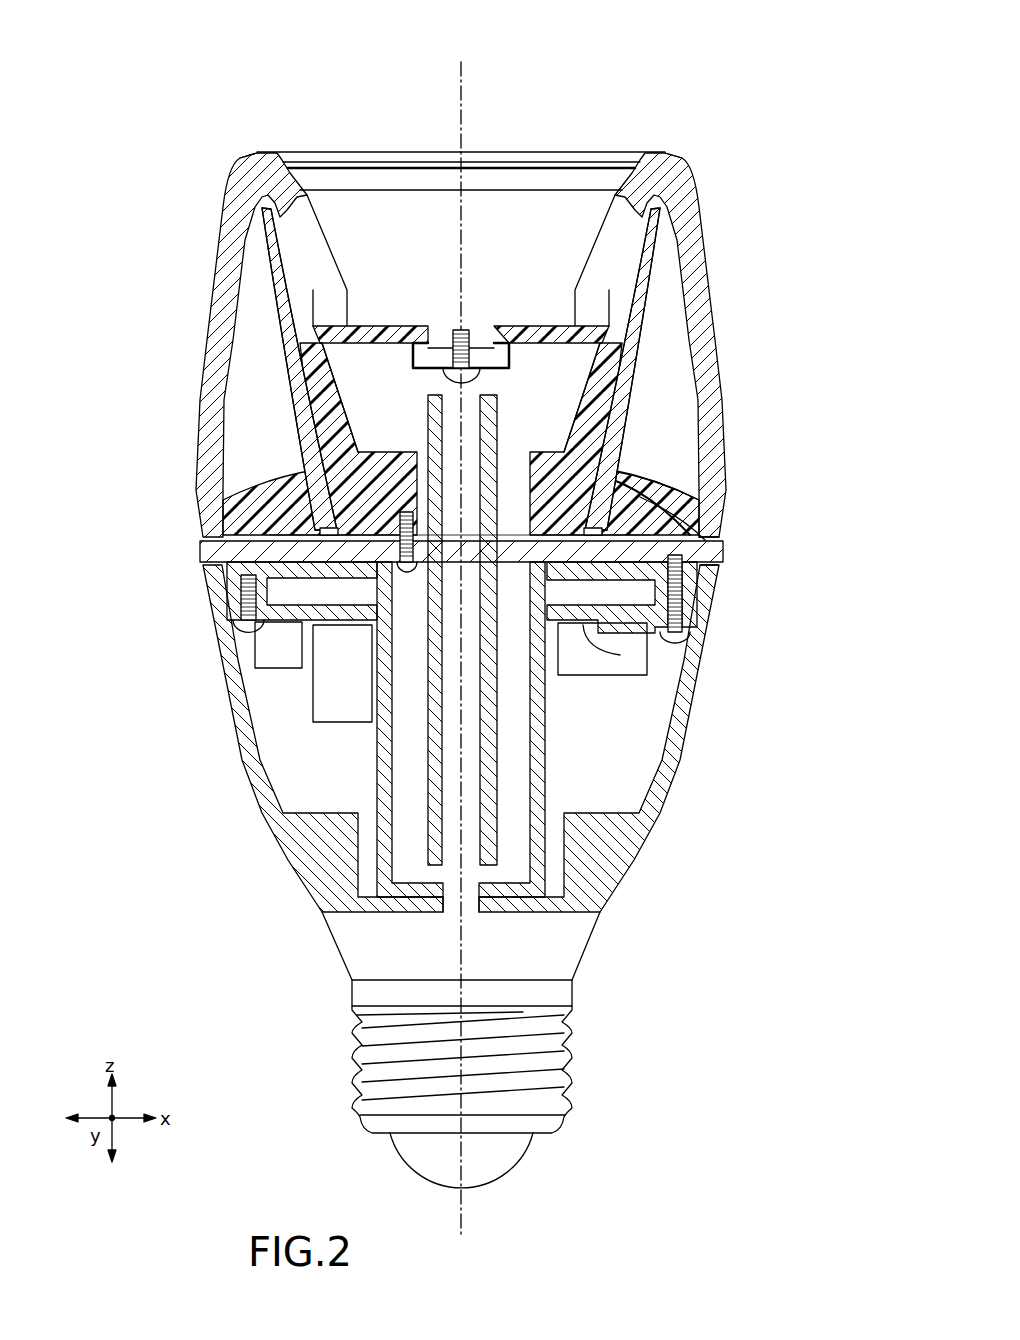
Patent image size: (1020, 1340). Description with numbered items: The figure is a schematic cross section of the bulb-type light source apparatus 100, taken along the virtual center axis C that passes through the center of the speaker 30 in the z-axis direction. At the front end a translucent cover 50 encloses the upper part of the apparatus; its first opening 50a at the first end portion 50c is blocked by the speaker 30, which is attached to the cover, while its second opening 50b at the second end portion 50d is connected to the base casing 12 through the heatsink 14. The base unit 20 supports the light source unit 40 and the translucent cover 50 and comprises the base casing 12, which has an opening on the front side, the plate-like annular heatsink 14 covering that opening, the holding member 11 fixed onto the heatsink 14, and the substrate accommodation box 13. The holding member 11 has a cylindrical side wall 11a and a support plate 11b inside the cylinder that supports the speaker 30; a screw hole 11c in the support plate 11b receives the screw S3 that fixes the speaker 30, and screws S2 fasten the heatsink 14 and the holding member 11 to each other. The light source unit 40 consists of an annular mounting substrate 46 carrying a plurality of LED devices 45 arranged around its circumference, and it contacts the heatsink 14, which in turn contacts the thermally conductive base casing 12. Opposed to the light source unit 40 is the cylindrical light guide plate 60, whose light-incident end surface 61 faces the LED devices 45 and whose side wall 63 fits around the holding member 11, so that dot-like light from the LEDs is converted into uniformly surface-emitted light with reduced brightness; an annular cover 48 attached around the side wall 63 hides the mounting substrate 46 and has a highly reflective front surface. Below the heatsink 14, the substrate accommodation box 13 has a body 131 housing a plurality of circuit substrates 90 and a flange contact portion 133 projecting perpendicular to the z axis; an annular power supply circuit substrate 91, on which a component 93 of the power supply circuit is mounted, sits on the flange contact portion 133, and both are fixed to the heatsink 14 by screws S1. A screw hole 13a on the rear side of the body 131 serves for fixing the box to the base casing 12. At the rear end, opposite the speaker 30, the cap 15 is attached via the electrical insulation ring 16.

The light source apparatus 100 is at (352, 92).
The virtual center axis C is at (461, 104).
The speaker 30 is at (555, 142).
The translucent cover 50 is at (205, 276).
The first opening 50a is at (330, 194).
The second opening 50b is at (728, 565).
The first end portion 50c is at (660, 158).
The second end portion 50d is at (722, 540).
The light guide plate 60 is at (656, 313).
The light-incident end surface 61 is at (330, 522).
The side wall 63 is at (603, 402).
The light source unit 40 is at (825, 362).
The LED devices 45 is at (615, 495).
The mounting substrate 46 is at (655, 500).
The annular cover 48 is at (700, 510).
The base unit 20 is at (90, 445).
The holding member 11 is at (255, 437).
The cylindrical side wall 11a is at (325, 418).
The support plate 11b is at (383, 333).
The screw hole 11c is at (445, 365).
The heatsink 14 is at (200, 545).
The substrate accommodation box 13 is at (447, 789).
The body 131 is at (540, 735).
The flange contact portion 133 is at (715, 590).
The screw hole 13a is at (388, 956).
The base casing 12 is at (265, 777).
The circuit substrates 90 is at (440, 790).
The power supply circuit substrate 91 is at (620, 655).
The component 93 is at (633, 665).
The electrical insulation ring 16 is at (570, 990).
The cap 15 is at (570, 1045).
The screws S1 is at (248, 634).
The screws S2 is at (408, 575).
The screw S3 is at (466, 333).